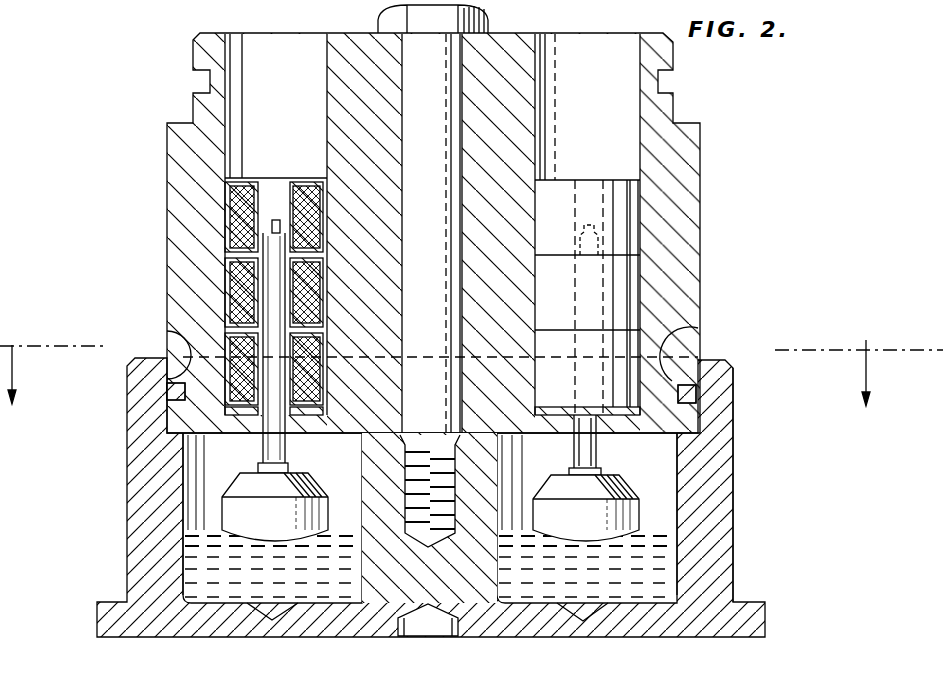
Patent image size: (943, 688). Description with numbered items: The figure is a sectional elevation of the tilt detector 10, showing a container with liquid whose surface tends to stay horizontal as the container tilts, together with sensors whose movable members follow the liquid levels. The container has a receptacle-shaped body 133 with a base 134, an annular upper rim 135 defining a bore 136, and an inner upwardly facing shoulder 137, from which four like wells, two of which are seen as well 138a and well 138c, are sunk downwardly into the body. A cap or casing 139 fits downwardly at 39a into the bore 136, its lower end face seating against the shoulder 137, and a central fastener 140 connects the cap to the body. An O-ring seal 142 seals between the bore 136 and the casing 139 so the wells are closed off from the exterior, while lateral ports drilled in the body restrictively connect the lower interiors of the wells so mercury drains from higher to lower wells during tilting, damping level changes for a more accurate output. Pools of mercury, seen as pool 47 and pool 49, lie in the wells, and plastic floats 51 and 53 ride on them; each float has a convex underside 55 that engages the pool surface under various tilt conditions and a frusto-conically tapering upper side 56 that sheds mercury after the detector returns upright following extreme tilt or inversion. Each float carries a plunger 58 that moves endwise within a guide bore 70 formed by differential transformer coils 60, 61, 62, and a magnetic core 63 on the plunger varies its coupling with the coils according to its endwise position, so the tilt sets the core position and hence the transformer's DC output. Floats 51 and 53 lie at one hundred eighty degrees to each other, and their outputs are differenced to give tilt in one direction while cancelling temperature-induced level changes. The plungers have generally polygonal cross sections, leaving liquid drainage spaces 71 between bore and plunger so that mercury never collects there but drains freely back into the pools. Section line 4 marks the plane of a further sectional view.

The tilt detector 10 is at (835, 133).
The cap or casing 139 is at (158, 187).
The body 133 is at (742, 533).
The base 134 is at (346, 625).
The annular upper rim 135 is at (725, 485).
The bore 136 is at (167, 333).
The inner upwardly facing shoulder 137 is at (166, 414).
The recess or well 138a is at (186, 497).
The recess or well 138c is at (682, 458).
The central fastener 140 is at (412, 117).
The O-ring seal 142 is at (697, 393).
The cap fitting location 39a is at (698, 330).
The pool of mercury 47 is at (218, 592).
The pool of mercury 49 is at (623, 590).
The plastic float 51 is at (318, 462).
The plastic float 53 is at (548, 462).
The convex underside 55 is at (262, 540).
The frusto-conically upwardly tapering upper side 56 is at (235, 487).
The plunger 58 is at (276, 313).
The differential transformer coil 60 is at (237, 222).
The differential transformer coil 61 is at (228, 275).
The differential transformer coil 62 is at (226, 356).
The magnetic core 63 is at (282, 226).
The guide bore 70 is at (284, 199).
The liquid drainage space 71 is at (288, 268).
The section line 4- 4 is at (471, 392).